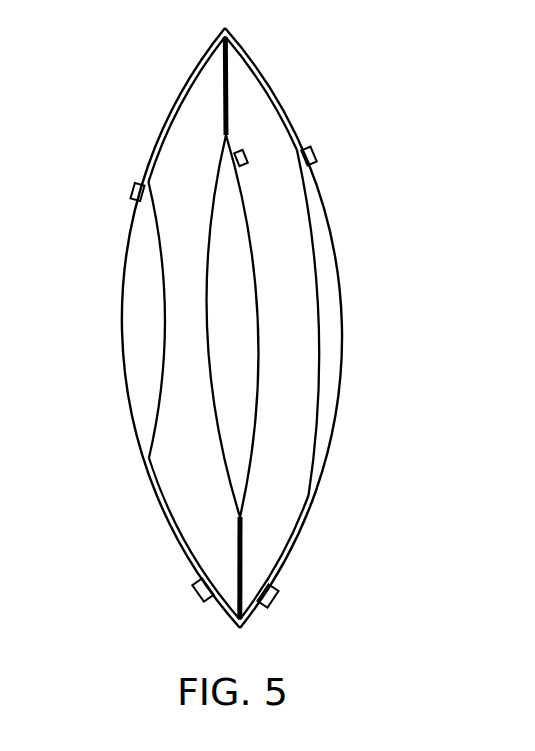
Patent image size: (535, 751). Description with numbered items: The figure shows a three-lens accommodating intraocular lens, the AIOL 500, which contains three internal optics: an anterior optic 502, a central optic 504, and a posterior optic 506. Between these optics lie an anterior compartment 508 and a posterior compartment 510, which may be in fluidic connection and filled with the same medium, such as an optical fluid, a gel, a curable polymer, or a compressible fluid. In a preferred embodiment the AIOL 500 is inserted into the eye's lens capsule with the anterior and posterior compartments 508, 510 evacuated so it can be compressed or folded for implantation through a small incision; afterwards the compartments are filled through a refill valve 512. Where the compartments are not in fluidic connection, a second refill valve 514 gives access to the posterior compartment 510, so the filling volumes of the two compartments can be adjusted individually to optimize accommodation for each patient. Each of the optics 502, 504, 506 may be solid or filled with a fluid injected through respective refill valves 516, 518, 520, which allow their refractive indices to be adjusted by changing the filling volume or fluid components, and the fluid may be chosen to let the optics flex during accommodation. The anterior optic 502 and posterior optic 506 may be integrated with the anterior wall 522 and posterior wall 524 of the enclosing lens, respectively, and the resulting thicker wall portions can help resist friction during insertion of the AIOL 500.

The AIOL 500 is at (404, 66).
The anterior optic 502 is at (143, 238).
The central optic 504 is at (225, 183).
The posterior optic 506 is at (320, 250).
The anterior compartment 508 is at (185, 293).
The posterior compartment 510 is at (287, 335).
The refill valve 512 is at (188, 588).
The second refill valve 514 is at (285, 592).
The refill valve 516 is at (132, 188).
The refill valve 518 is at (244, 155).
The refill valve 520 is at (320, 150).
The anterior wall 522 is at (130, 405).
The posterior wall 524 is at (327, 440).